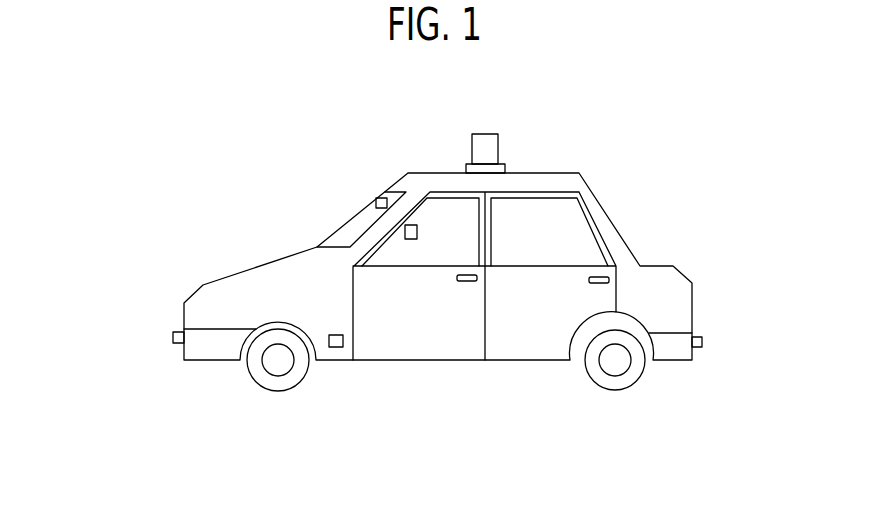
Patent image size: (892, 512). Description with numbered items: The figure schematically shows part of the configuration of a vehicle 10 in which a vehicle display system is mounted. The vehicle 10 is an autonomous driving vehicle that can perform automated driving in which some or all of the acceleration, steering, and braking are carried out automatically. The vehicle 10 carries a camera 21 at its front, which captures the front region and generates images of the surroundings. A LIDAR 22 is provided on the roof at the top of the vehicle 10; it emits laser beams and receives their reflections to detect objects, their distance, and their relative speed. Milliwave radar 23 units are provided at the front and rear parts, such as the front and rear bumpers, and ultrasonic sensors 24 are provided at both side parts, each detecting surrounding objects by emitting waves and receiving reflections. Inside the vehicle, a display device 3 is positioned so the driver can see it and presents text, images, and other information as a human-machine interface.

The vehicle 10 is at (655, 175).
The display device 3 is at (418, 231).
The camera 21 is at (378, 200).
The LIDAR 22 is at (489, 134).
The milliwave radar 23 is at (174, 337).
The ultrasonic sensor 24 is at (336, 347).